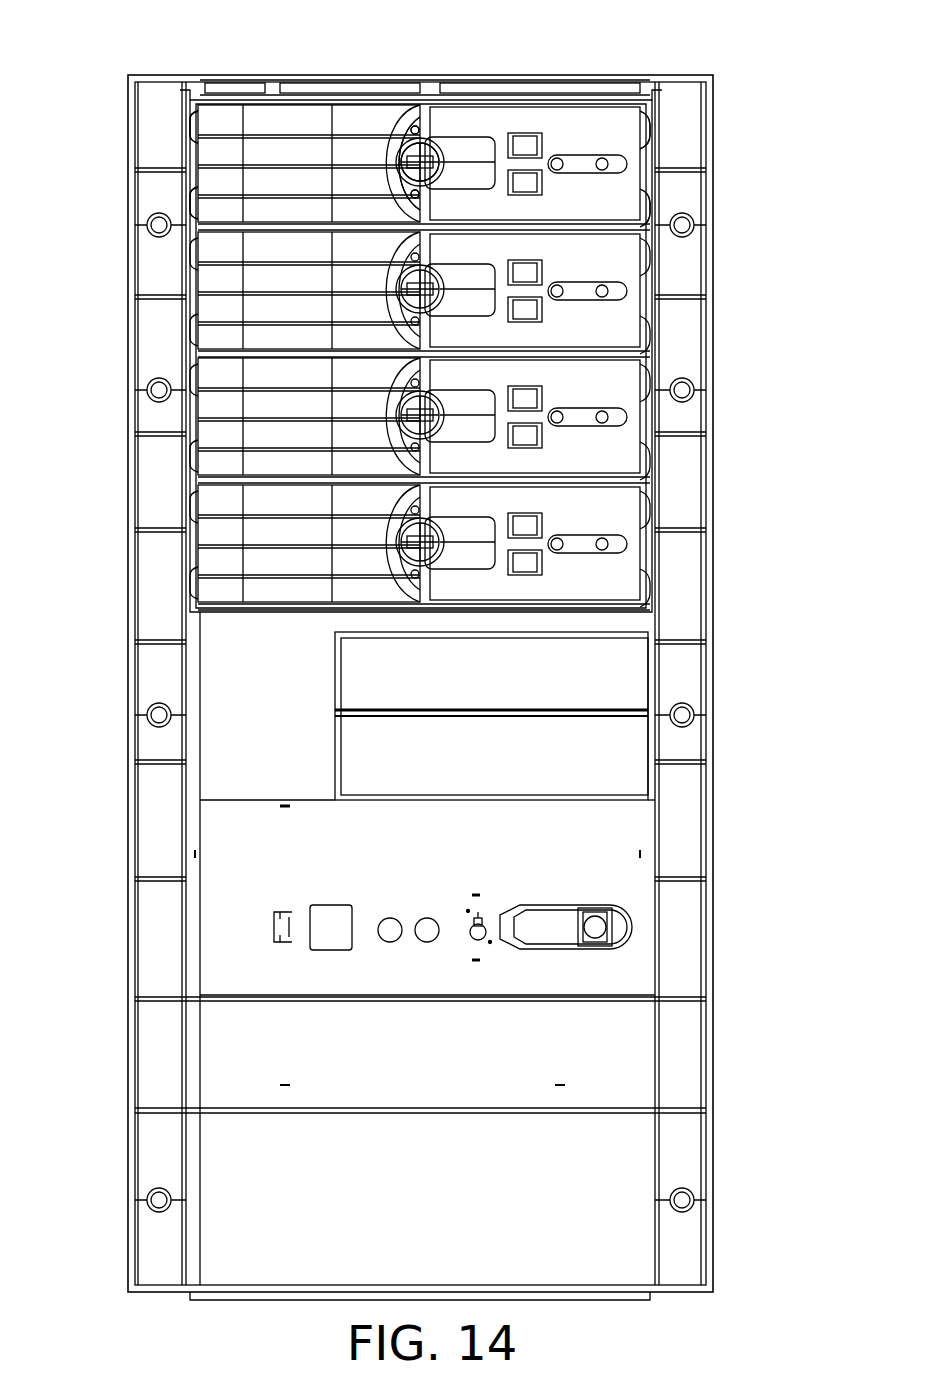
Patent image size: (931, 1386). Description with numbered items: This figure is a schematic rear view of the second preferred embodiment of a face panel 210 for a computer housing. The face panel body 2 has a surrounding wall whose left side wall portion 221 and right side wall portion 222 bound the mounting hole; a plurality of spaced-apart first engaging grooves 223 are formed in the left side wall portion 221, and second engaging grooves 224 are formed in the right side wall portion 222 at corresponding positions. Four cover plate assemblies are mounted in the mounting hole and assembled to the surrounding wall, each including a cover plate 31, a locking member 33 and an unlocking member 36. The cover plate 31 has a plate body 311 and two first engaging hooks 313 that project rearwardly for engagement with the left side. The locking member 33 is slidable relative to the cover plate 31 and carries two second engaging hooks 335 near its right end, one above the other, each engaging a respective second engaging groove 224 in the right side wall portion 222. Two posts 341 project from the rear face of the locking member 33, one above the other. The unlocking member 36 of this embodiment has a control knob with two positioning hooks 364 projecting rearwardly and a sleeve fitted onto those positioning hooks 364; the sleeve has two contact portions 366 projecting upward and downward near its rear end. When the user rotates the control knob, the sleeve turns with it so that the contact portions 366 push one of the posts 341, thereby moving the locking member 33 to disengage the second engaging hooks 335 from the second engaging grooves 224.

The face panel body 2 is at (722, 68).
The face panel 210 is at (152, 55).
The left side wall portion 221 is at (184, 280).
The right side wall portion 222 is at (652, 278).
The first engaging grooves 223 is at (192, 104).
The second engaging grooves 224 is at (652, 104).
The cover plate 31 is at (225, 307).
The plate body 311 is at (275, 147).
The first engaging hooks 313 is at (194, 122).
The locking member 33 is at (491, 316).
The second engaging hooks 335 is at (648, 124).
The unlocking member 36 is at (378, 301).
The posts 341 is at (395, 160).
The positioning hooks 364 is at (440, 160).
The contact portions 366 is at (410, 192).